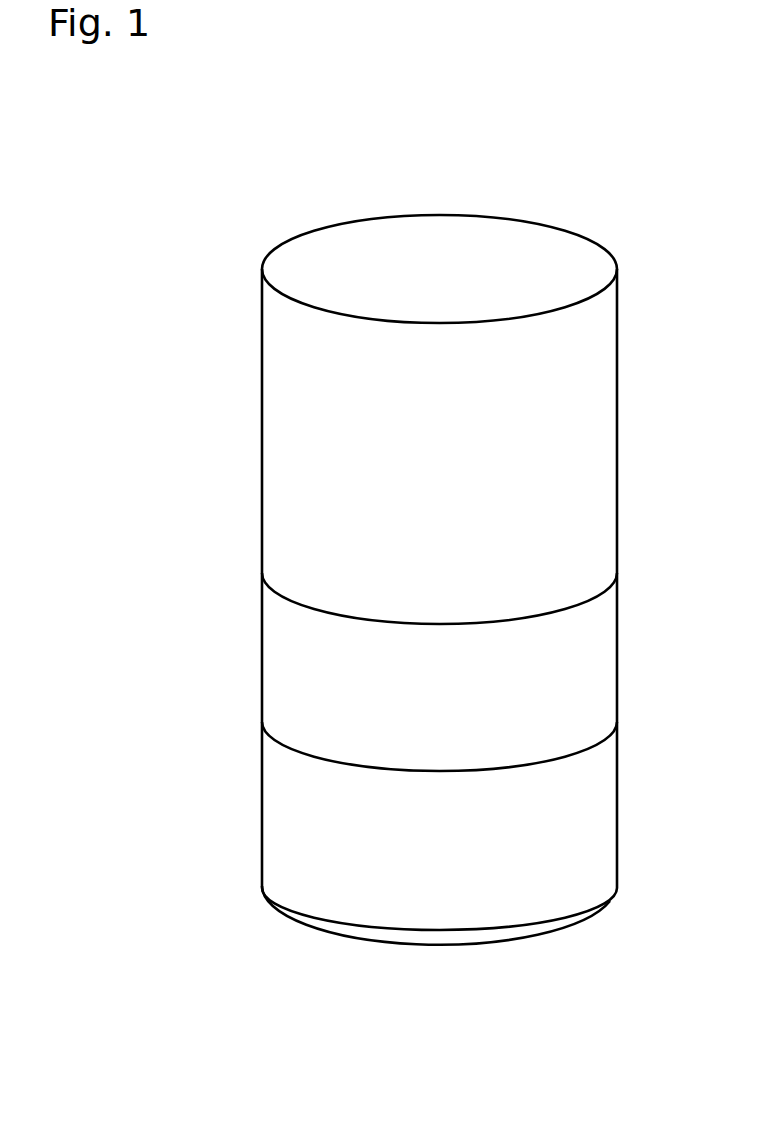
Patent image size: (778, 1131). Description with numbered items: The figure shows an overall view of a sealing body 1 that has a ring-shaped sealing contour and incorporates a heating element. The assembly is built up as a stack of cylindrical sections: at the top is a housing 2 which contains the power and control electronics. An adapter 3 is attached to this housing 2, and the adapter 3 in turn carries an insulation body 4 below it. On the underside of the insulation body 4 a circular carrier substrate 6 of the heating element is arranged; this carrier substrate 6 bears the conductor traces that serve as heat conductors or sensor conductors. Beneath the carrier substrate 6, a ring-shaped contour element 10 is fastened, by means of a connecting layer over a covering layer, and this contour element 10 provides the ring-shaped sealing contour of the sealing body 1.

The sealing body 1 is at (520, 587).
The housing 2 is at (603, 408).
The adapter 3 is at (603, 652).
The insulation body 4 is at (603, 804).
The carrier substrate 6 is at (612, 901).
The ring-shaped contour element 10 is at (570, 937).